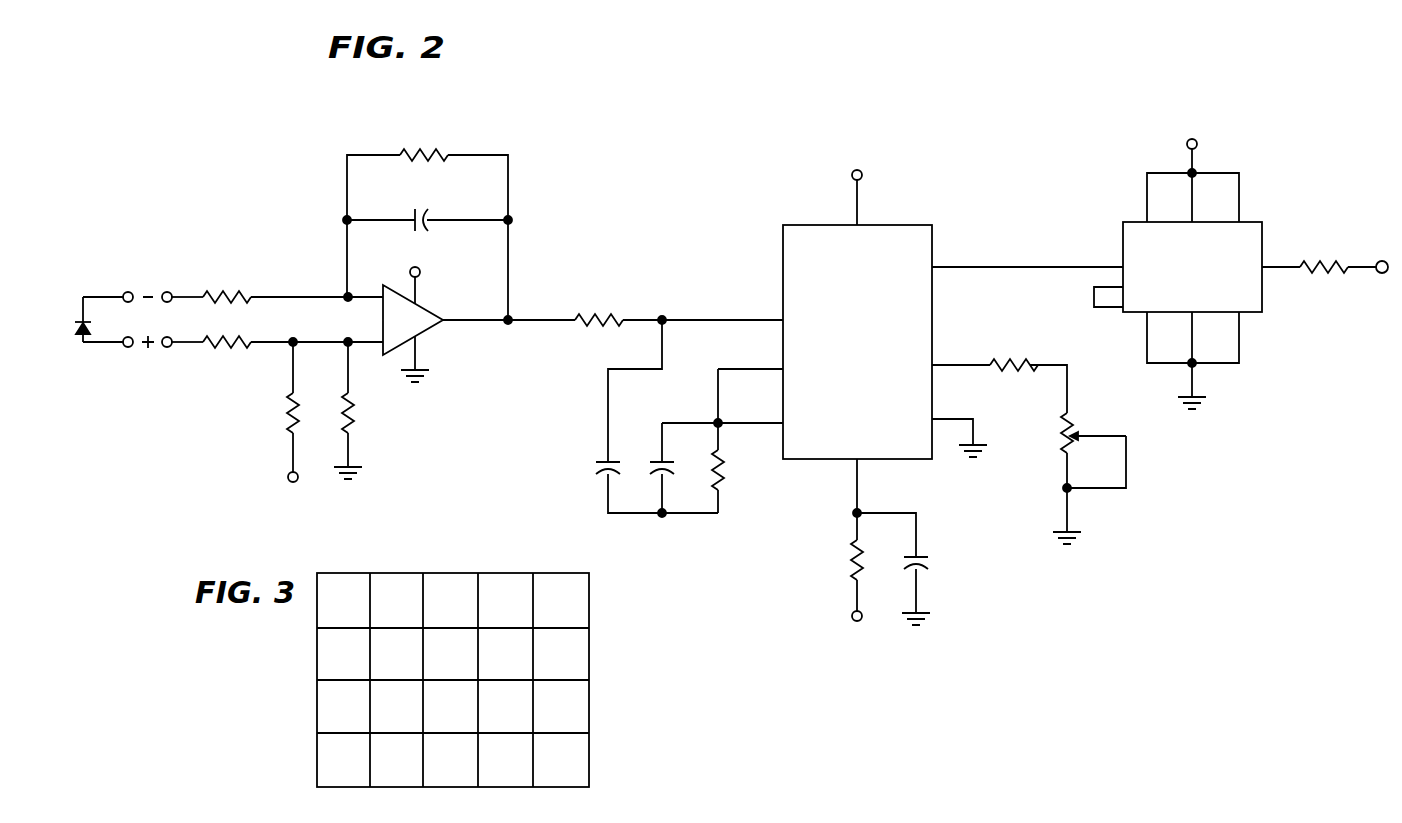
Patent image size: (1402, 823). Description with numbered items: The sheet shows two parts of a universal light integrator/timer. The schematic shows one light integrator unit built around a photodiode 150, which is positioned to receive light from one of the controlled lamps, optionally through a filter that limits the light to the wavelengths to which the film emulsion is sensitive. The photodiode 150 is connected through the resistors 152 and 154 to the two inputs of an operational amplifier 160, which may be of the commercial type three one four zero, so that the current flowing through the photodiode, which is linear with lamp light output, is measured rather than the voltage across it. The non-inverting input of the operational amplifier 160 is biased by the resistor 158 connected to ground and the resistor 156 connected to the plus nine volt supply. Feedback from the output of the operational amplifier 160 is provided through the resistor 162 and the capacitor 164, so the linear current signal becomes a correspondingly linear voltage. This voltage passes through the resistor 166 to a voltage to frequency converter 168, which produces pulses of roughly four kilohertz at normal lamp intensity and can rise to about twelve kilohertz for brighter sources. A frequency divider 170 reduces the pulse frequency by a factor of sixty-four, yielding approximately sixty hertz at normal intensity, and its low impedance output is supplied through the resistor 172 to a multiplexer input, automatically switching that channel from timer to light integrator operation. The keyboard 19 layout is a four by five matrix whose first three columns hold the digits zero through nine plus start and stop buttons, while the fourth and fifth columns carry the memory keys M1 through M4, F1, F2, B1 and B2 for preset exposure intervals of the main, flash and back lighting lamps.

In FIG. 3, the keyboard 19 is at (432, 573).
In FIG. 2, the photodiode 150 is at (95, 326).
In FIG. 2, the resistor 152 is at (212, 295).
In FIG. 2, the resistor 154 is at (238, 339).
In FIG. 2, the resistor 156 is at (299, 402).
In FIG. 2, the resistor 158 is at (342, 431).
In FIG. 2, the operational amplifier 160 is at (422, 333).
In FIG. 2, the resistor 162 is at (428, 158).
In FIG. 2, the capacitor 164 is at (427, 224).
In FIG. 2, the resistor 166 is at (595, 326).
In FIG. 2, the voltage to frequency converter 168 is at (920, 324).
In FIG. 2, the frequency divider 170 is at (1258, 289).
In FIG. 2, the resistor 172 is at (1322, 259).